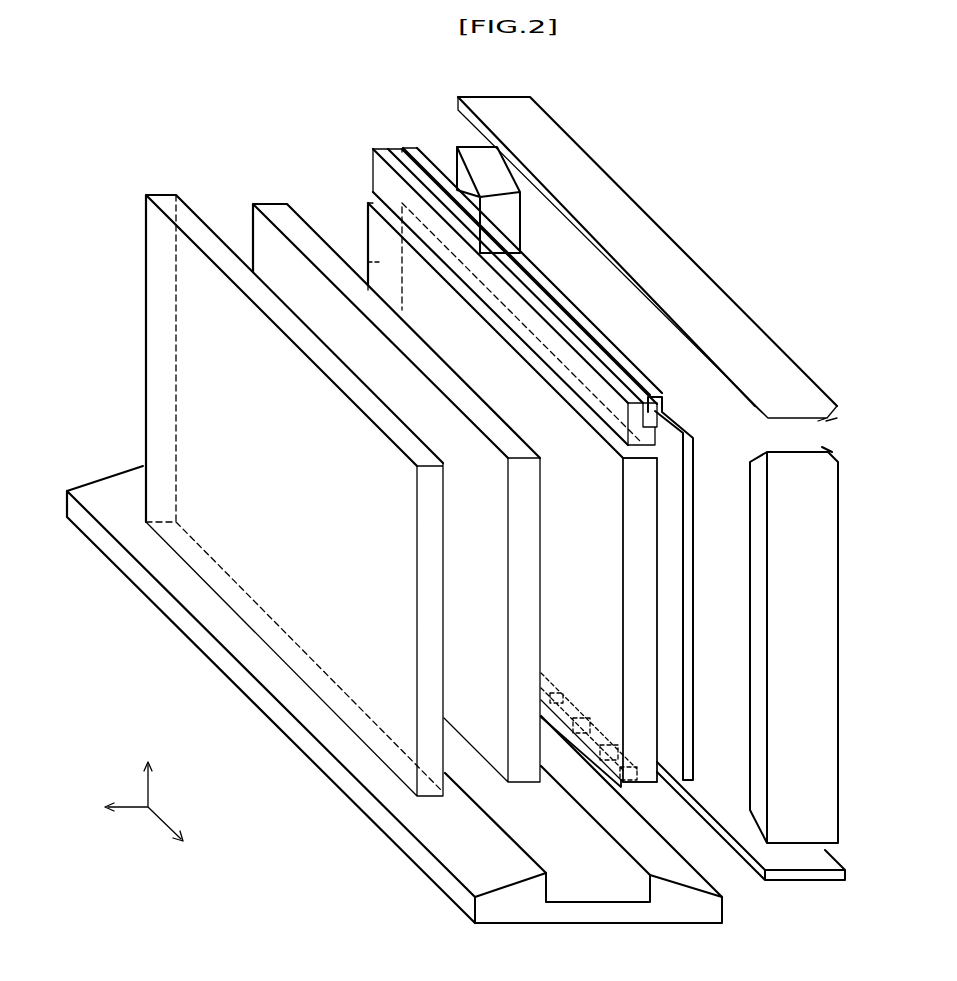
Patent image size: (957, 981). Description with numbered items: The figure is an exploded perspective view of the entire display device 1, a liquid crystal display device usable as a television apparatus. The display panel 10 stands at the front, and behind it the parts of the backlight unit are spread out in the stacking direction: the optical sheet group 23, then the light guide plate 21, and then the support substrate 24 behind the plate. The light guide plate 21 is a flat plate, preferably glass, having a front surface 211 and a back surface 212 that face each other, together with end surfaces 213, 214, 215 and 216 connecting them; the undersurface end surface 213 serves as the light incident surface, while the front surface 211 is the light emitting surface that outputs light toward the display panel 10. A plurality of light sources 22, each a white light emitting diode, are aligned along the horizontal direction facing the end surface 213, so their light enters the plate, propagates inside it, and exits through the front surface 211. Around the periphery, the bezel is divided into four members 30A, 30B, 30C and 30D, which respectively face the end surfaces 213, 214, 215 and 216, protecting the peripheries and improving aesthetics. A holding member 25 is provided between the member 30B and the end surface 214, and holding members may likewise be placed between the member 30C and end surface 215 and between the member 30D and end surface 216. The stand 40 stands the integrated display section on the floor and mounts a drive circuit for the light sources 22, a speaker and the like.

The display device 1 is at (84, 121).
The display panel 10 is at (163, 213).
The optical sheet group 23 is at (273, 213).
The light guide plate 21 is at (412, 287).
The end surface 216 is at (353, 250).
The end surface 214 is at (643, 421).
The back surface 212 is at (640, 600).
The end surface 215 is at (637, 642).
The front surface 211 is at (600, 649).
The end surface 213 is at (625, 798).
The holding member 25 is at (590, 283).
The member 30D is at (479, 177).
The member 30B is at (562, 153).
The support substrate 24 is at (690, 533).
The member 30C is at (826, 750).
The member 30A is at (810, 864).
The light source 22 is at (620, 808).
The stand 40 is at (705, 910).